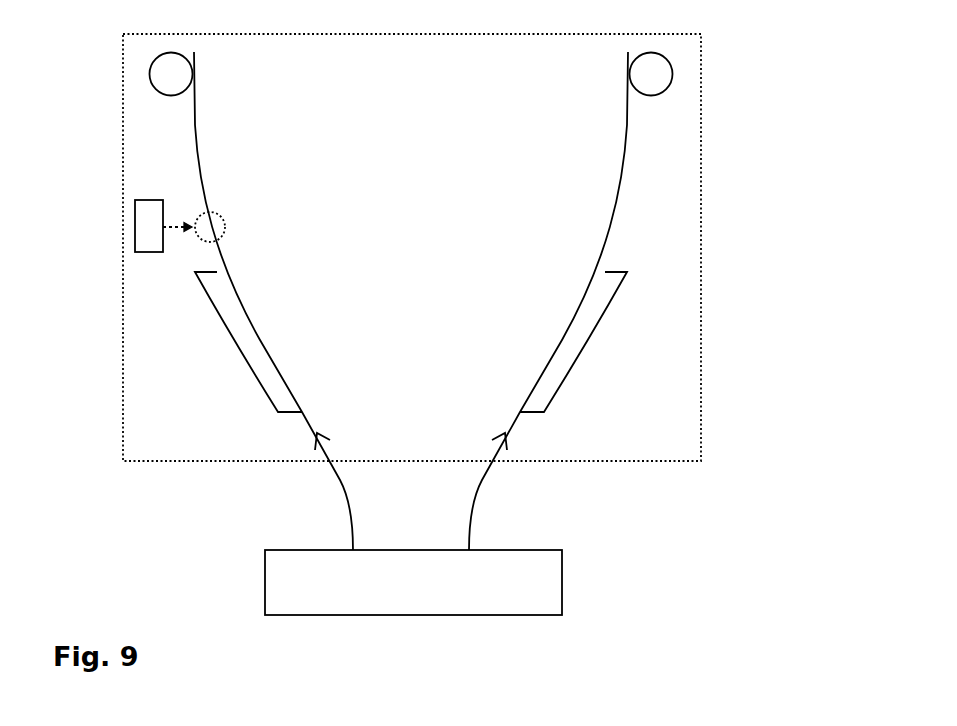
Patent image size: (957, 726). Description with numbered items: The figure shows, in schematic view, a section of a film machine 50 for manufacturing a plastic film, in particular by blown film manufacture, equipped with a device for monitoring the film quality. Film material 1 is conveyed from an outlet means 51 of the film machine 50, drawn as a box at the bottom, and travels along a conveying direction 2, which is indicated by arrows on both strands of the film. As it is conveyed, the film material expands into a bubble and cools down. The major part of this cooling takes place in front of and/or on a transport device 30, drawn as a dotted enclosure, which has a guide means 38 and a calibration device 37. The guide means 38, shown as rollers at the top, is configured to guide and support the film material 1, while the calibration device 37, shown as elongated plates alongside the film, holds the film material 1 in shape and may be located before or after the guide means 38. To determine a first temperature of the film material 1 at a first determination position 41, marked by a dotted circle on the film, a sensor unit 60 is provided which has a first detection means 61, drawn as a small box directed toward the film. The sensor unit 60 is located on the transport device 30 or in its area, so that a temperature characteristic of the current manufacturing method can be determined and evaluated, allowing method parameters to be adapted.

The film material 1 is at (483, 487).
The conveying direction 2 is at (327, 453).
The transport device 30 is at (702, 228).
The calibration device 37 is at (563, 363).
The guide means 38 is at (663, 68).
The first determination position 41 is at (222, 220).
The film machine 50 is at (519, 617).
The outlet means 51 is at (547, 582).
The sensor unit 60 is at (112, 231).
The first detection means 61 is at (145, 240).